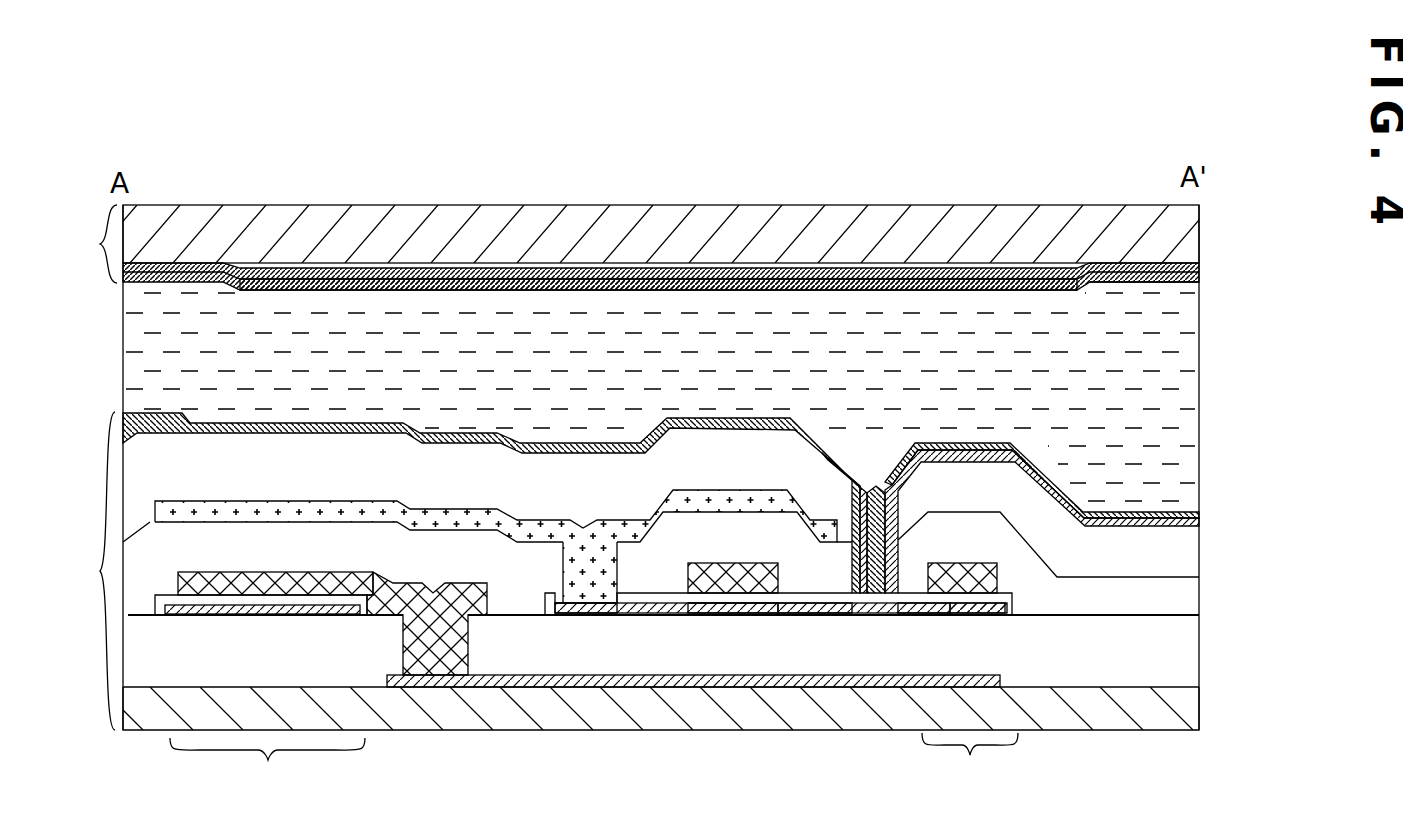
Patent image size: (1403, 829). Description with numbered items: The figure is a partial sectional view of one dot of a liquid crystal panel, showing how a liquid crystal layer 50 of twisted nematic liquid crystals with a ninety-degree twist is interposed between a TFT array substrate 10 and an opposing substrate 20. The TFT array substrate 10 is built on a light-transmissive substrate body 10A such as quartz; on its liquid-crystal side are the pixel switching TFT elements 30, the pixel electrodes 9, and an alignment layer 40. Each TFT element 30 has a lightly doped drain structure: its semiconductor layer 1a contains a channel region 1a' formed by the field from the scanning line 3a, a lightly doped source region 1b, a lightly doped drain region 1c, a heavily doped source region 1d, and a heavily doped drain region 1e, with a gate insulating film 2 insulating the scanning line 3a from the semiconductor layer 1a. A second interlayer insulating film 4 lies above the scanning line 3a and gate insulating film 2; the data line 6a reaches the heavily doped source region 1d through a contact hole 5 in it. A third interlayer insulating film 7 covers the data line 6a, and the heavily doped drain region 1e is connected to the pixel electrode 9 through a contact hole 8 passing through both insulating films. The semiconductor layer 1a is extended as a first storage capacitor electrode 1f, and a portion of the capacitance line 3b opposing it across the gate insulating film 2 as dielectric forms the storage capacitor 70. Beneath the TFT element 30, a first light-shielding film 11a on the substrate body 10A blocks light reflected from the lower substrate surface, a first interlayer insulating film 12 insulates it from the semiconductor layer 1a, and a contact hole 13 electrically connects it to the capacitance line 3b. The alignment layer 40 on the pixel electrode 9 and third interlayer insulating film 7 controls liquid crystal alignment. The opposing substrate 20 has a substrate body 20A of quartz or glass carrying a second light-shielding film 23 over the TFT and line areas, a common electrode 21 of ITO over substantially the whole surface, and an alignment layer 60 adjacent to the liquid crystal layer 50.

The semiconductor layer 1a is at (708, 691).
The channel region 1a' is at (739, 638).
The lightly doped source region 1b is at (680, 618).
The lightly doped drain region 1c is at (800, 618).
The heavily doped source region 1d is at (585, 618).
The heavily doped drain region 1e is at (893, 618).
The first storage capacitor electrode 1f is at (313, 613).
The gate insulating film 2 is at (143, 618).
The scanning line 3a is at (700, 563).
The capacitance line 3b is at (233, 575).
The second interlayer insulating film 4 is at (1182, 595).
The contact hole 5 is at (608, 580).
The data line 6a is at (450, 520).
The third interlayer insulating film 7 is at (1185, 550).
The contact hole 8 is at (868, 485).
The pixel electrode 9 is at (1192, 522).
The TFT array substrate 10 is at (630, 467).
The substrate body 10A is at (1192, 715).
The first light-shielding film 11a is at (817, 688).
The first interlayer insulating film 12 is at (1180, 655).
The contact hole 13 is at (467, 622).
The opposing substrate 20 is at (92, 244).
The substrate body 20A is at (1187, 227).
The common electrode 21 is at (1192, 272).
The second light-shielding film 23 is at (424, 268).
The TFT element 30 is at (725, 658).
The alignment layer 40 is at (1198, 509).
The liquid crystal layer 50 is at (1185, 335).
The alignment layer 60 is at (1199, 281).
The storage capacitor 70 is at (988, 797).